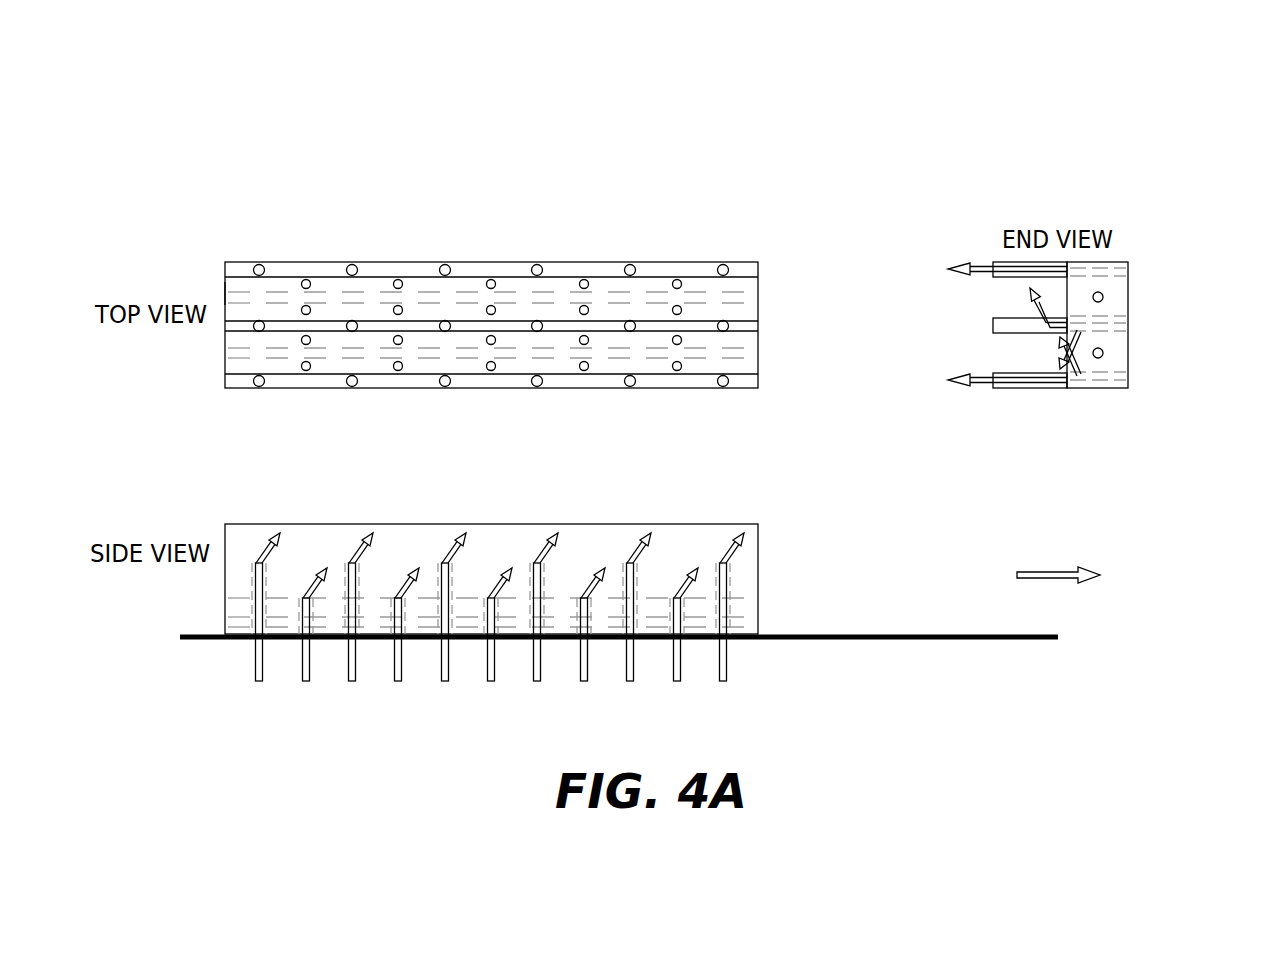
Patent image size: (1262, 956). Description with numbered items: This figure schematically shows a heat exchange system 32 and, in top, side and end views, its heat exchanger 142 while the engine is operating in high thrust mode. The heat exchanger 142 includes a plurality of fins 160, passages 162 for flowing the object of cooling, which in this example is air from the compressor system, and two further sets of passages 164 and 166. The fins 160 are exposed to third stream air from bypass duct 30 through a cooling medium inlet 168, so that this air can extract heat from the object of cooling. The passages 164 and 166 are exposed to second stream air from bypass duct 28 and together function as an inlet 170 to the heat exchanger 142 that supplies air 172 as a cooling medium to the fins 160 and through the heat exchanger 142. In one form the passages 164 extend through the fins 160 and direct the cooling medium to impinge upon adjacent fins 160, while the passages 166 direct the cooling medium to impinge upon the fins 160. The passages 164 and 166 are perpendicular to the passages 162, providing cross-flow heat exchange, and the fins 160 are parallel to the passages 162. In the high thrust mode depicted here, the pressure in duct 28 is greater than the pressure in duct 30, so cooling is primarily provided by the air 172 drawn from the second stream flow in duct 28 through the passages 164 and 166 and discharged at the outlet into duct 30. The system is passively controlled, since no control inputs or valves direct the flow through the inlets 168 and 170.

The bypass duct 28 is at (883, 675).
The bypass duct 30 is at (926, 546).
The heat exchange system 32 is at (708, 93).
The heat exchanger 142 is at (573, 215).
The fins 160 is at (750, 317).
The passages 162 is at (253, 358).
The passages 164 is at (450, 265).
The passages 166 is at (590, 282).
The cooling medium inlet 168 is at (222, 293).
The inlet 170 is at (763, 665).
The air 172 is at (353, 552).